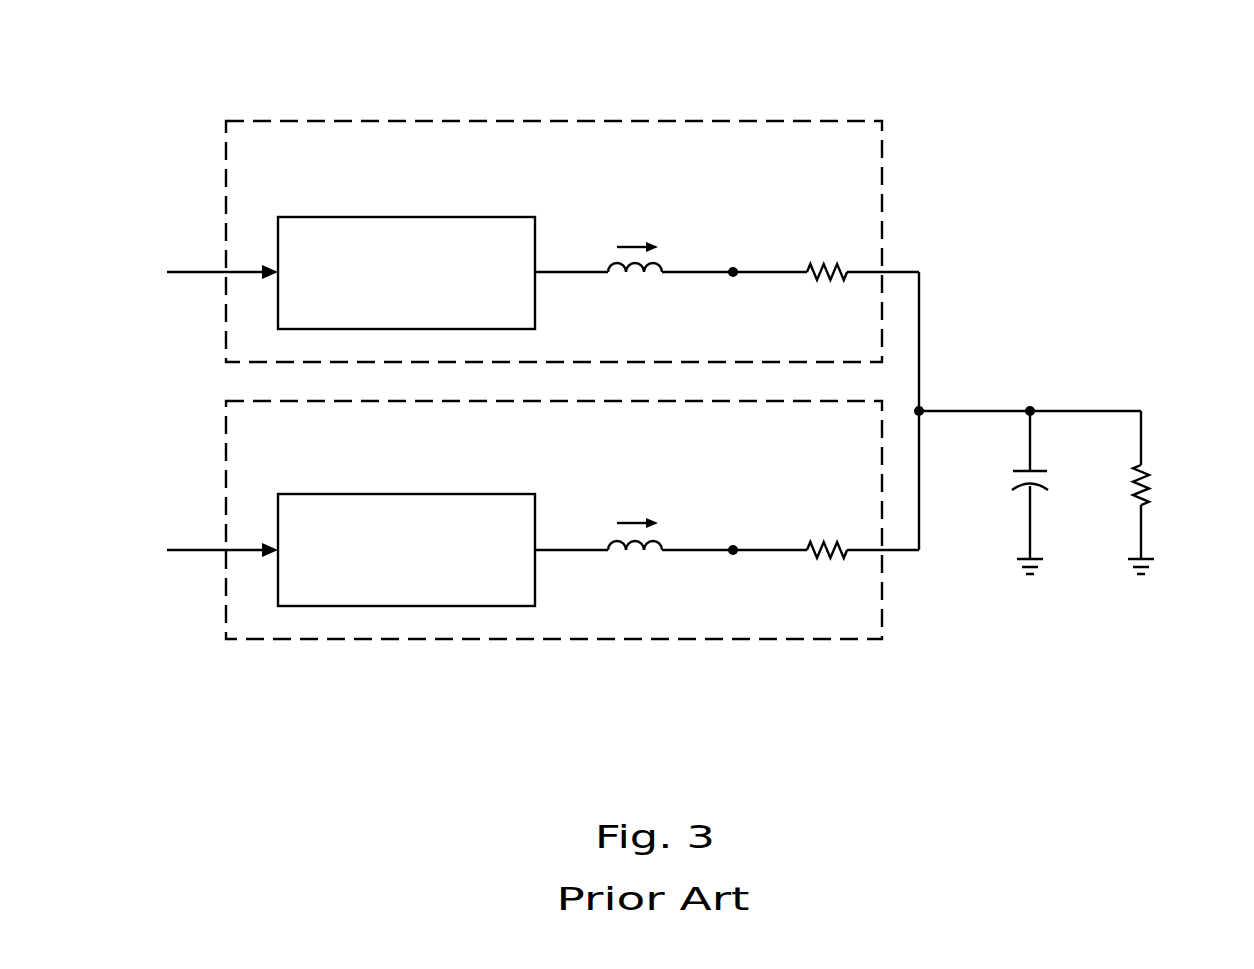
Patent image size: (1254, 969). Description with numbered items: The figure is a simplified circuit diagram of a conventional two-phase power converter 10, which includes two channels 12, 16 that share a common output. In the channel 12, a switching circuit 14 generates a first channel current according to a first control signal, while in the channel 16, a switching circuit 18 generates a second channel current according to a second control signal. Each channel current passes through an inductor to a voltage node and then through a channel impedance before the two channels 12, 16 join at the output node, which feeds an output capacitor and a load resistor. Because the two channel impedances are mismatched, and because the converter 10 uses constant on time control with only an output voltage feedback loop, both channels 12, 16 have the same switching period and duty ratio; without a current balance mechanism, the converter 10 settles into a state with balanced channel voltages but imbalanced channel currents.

The two-phase power converter 10 is at (1121, 107).
The channel 12 is at (226, 180).
The switching circuit 14 is at (401, 216).
The channel 16 is at (226, 459).
The switching circuit 18 is at (401, 493).